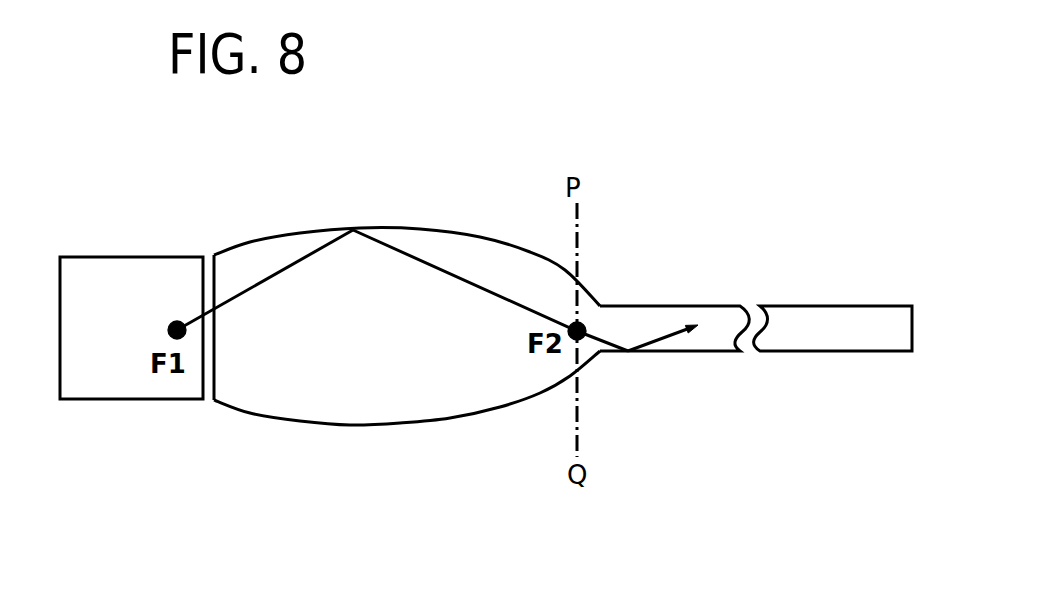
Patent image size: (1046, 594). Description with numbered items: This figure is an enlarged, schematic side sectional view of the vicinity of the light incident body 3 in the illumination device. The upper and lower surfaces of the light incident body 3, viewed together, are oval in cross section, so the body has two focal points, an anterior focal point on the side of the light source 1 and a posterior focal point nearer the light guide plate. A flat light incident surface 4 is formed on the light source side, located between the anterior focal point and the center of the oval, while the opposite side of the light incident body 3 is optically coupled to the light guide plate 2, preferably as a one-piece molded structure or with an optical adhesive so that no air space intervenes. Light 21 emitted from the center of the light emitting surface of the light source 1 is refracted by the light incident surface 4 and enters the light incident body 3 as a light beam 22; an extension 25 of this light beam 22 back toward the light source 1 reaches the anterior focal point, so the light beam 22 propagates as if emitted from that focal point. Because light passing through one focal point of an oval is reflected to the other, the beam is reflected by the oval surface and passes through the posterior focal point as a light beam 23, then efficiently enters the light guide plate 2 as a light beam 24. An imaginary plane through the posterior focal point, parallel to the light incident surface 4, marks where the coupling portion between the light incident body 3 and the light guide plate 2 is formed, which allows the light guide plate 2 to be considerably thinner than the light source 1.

The light source 1 is at (87, 257).
The extension of the light beam 25 is at (193, 322).
The light incident surface 4 is at (215, 373).
The light beam 22 is at (267, 277).
The light incident body 3 is at (367, 424).
The light 21 is at (200, 327).
The light beam 23 is at (465, 277).
The light beam 24 is at (675, 337).
The light guide plate 2 is at (670, 305).